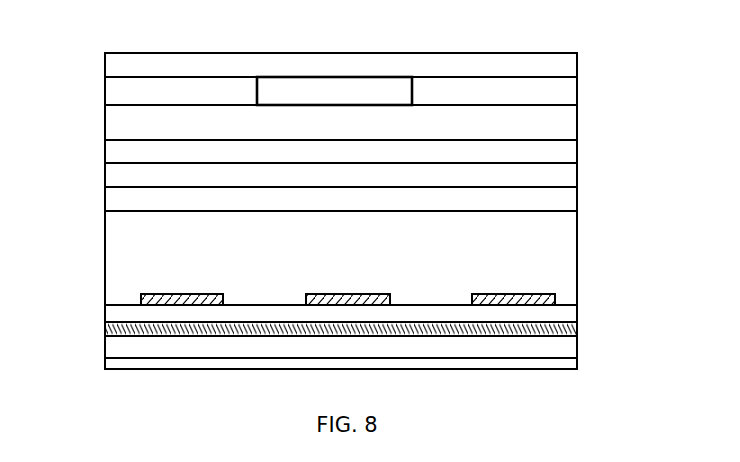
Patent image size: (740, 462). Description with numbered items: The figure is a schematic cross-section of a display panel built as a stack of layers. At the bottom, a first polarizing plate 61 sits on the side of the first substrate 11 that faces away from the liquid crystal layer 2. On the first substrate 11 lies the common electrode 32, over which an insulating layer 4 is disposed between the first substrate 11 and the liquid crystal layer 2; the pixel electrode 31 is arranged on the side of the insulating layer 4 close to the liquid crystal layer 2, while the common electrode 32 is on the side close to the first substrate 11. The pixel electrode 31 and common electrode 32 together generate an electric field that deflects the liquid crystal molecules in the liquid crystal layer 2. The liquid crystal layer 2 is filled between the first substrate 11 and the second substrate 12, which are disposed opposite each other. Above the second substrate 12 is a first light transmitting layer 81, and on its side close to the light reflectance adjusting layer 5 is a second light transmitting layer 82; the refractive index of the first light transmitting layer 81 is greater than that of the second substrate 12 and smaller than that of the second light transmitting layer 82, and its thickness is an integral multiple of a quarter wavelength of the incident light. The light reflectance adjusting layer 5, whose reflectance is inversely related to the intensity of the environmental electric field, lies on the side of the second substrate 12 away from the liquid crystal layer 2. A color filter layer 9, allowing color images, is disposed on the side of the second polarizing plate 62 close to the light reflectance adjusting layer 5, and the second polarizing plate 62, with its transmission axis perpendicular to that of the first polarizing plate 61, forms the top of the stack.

The second polarizing plate 62 is at (577, 63).
The color filter layer 9 is at (577, 90).
The light reflectance adjusting layer 5 is at (577, 122).
The second light transmitting layer 82 is at (577, 150).
The first light transmitting layer 81 is at (577, 176).
The second substrate 12 is at (577, 200).
The liquid crystal layer 2 is at (577, 258).
The pixel electrode 31 is at (141, 302).
The insulating layer 4 is at (105, 315).
The common electrode 32 is at (105, 329).
The first substrate 11 is at (577, 346).
The first polarizing plate 61 is at (577, 364).